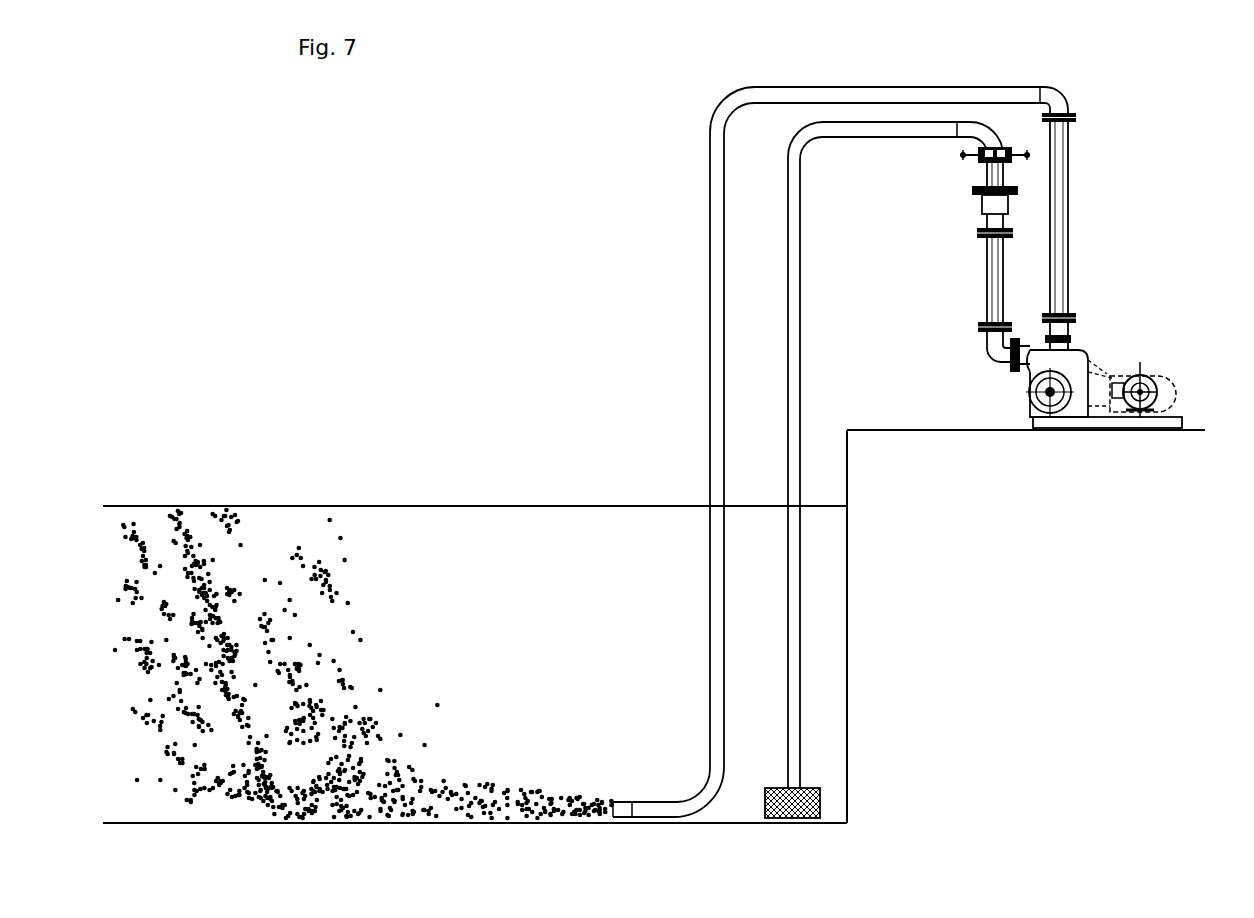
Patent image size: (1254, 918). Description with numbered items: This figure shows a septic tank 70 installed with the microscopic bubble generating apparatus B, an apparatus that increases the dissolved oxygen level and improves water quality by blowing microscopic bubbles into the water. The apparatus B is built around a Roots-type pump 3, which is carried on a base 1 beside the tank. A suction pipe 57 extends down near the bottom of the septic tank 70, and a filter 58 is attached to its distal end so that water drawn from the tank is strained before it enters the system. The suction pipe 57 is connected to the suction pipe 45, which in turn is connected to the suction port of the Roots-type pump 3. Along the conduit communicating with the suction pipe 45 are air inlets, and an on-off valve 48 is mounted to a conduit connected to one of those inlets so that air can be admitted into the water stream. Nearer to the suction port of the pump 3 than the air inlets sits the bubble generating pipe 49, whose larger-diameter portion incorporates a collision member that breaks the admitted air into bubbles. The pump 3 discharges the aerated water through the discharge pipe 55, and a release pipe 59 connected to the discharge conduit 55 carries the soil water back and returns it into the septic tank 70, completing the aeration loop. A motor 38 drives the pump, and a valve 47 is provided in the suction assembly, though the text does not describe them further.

The base 1 is at (1122, 420).
The Roots-type pump 3 is at (1083, 352).
The motor 38 is at (1147, 378).
The suction pipe 45 is at (992, 290).
The valve 47 is at (975, 162).
The on-off valve 48 is at (963, 159).
The bubble generating pipe 49 is at (1008, 205).
The discharge pipe 55 is at (1065, 245).
The suction pipe 57 is at (797, 227).
The filter 58 is at (820, 797).
The release pipe 59 is at (717, 203).
The septic tank 70 is at (349, 476).
The microscopic bubble generating apparatus B is at (1090, 137).